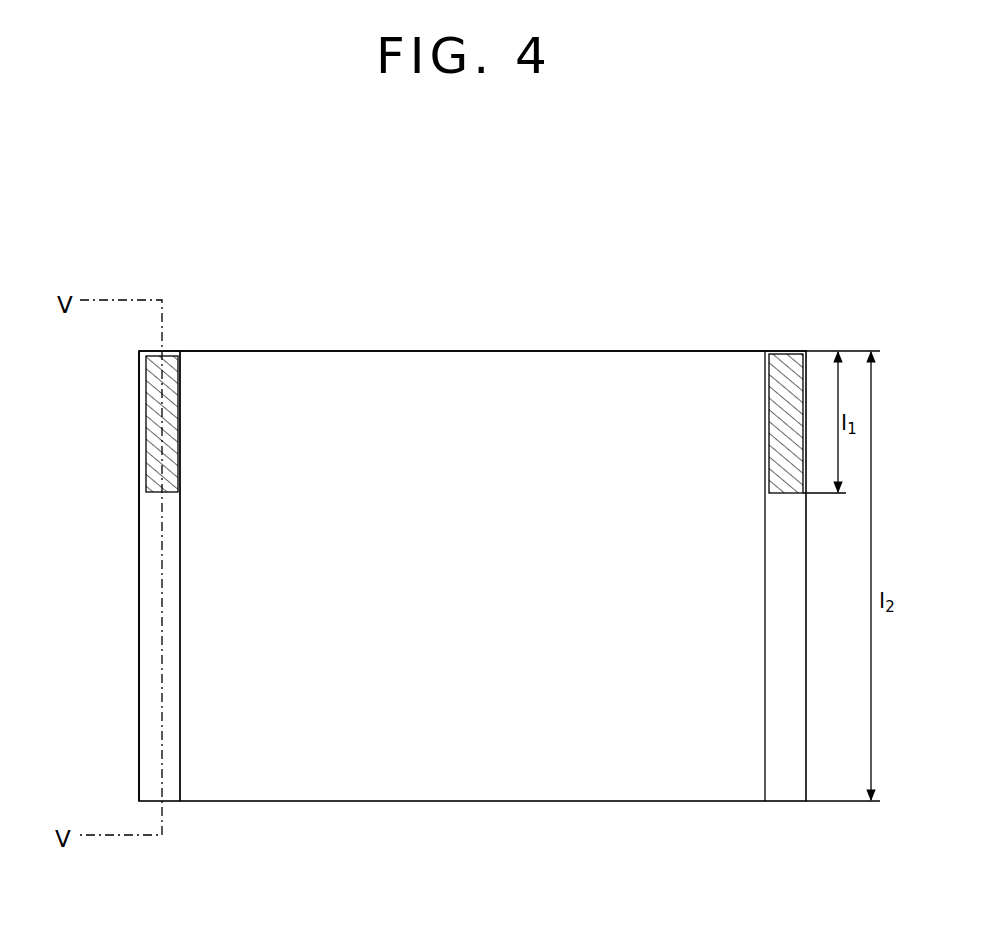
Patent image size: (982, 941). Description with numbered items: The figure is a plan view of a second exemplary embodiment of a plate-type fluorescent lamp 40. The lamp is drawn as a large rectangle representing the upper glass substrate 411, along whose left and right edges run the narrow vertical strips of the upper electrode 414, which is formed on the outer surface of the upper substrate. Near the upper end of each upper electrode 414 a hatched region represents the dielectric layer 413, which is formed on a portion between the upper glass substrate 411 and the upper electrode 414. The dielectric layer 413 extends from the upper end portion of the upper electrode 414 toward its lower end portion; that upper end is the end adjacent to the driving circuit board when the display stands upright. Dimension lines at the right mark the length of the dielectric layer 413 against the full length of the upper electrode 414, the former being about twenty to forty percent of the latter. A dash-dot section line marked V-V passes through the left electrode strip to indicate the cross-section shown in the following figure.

The plate-type fluorescent lamp 40 is at (587, 253).
The upper glass substrate 411 is at (341, 351).
The dielectric layer 413 is at (146, 444).
The upper electrode 414 is at (136, 554).